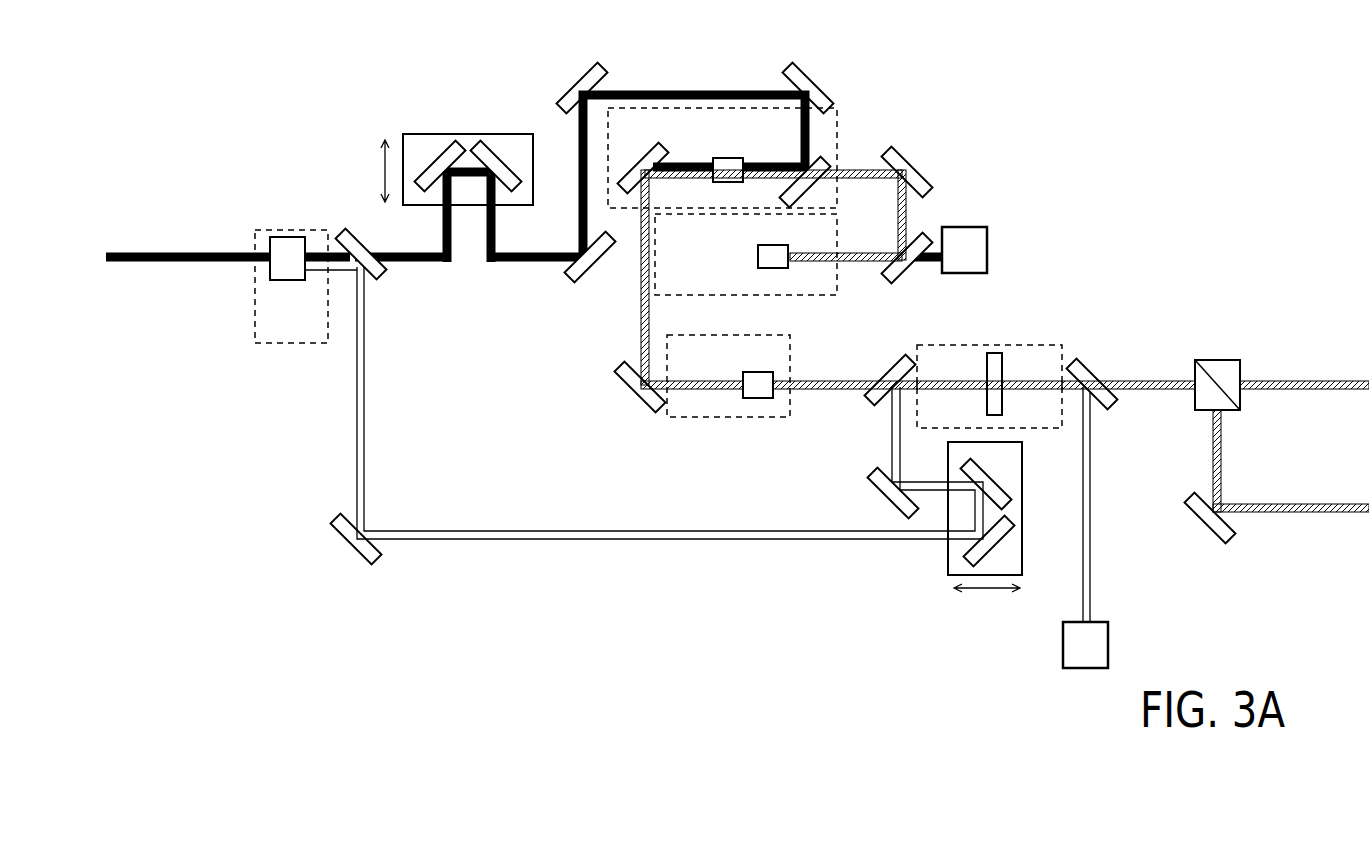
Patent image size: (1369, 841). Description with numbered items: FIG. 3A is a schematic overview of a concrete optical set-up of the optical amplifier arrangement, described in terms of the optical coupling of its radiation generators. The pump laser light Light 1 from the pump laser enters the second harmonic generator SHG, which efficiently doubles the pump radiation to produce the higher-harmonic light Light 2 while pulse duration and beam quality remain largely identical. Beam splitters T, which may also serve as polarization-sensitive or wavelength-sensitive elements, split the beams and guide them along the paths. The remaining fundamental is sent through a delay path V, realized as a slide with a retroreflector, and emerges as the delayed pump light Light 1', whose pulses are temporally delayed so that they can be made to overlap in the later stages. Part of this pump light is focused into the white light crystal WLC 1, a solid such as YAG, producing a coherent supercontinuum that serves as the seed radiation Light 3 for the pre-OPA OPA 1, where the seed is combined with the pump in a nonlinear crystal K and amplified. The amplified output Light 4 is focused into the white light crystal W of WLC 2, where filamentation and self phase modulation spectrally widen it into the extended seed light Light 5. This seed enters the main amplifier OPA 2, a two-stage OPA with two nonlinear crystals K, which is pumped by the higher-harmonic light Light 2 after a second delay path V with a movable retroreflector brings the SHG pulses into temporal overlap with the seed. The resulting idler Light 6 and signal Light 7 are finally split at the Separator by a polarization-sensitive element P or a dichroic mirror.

The pump laser light Light 1 is at (188, 230).
The second harmonic generator SHG is at (291, 286).
The delayed pump light Light 1' is at (470, 242).
The delay path V is at (426, 138).
The beam splitter T is at (378, 273).
The pre-OPA OPA 1 is at (722, 158).
The nonlinear crystal K is at (735, 167).
The seed radiation Light 3 is at (907, 217).
The white light crystal WLC 1 is at (746, 254).
The white light crystal W is at (785, 263).
The white light crystal WLC 2 is at (728, 376).
The amplified signal light Light 4 is at (695, 392).
The supercontinuum seed light Light 5 is at (838, 378).
The main-OPA OPA 2 is at (989, 373).
The idler Light 6 is at (1310, 380).
The separator Separator is at (1216, 371).
The polarization-sensitive element P is at (1230, 397).
The signal Light 7 is at (1318, 515).
The higher-harmonic light Light 2 is at (422, 535).